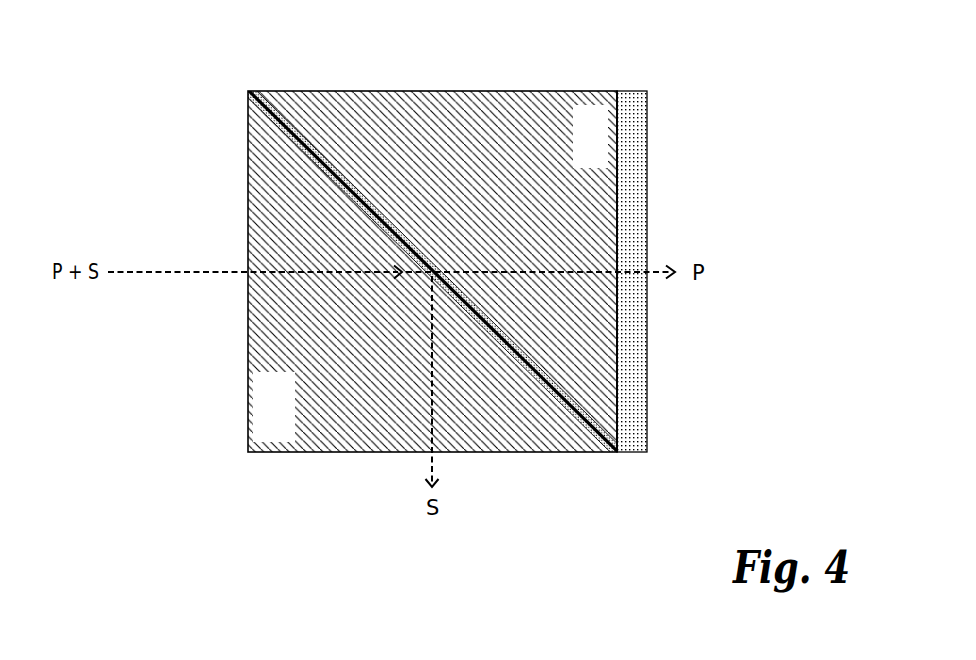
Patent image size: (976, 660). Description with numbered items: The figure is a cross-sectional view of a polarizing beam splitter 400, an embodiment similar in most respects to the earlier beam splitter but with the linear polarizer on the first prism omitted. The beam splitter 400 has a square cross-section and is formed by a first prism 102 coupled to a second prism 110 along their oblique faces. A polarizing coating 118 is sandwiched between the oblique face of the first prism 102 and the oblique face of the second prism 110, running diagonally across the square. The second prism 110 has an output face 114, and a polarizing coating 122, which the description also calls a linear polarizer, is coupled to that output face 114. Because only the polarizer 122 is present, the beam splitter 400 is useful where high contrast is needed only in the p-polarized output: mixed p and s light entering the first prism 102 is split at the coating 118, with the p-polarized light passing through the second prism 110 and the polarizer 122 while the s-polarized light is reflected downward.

The polarizing beam splitter 400 is at (406, 288).
The first prism 102 is at (291, 417).
The second prism 110 is at (606, 146).
The polarizing coating 118 is at (278, 103).
The output face 114 is at (617, 110).
The polarizing coating 122 is at (635, 212).